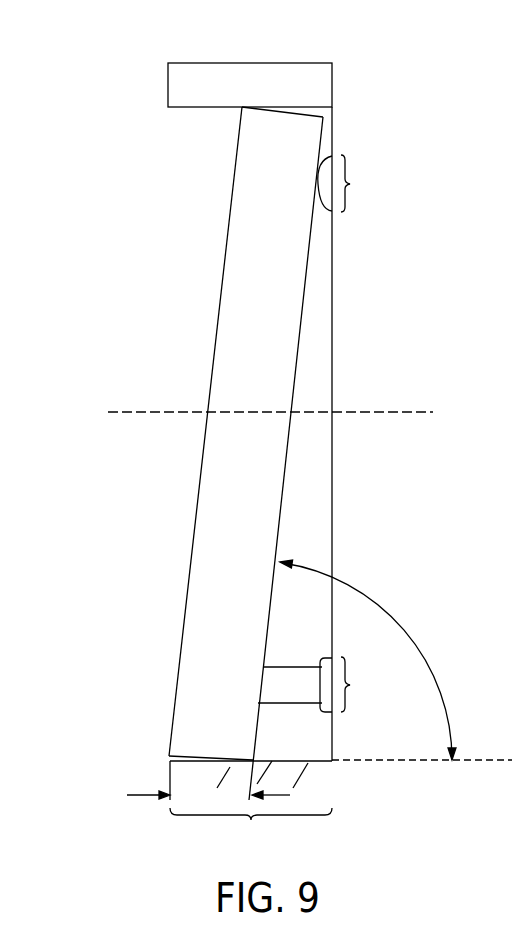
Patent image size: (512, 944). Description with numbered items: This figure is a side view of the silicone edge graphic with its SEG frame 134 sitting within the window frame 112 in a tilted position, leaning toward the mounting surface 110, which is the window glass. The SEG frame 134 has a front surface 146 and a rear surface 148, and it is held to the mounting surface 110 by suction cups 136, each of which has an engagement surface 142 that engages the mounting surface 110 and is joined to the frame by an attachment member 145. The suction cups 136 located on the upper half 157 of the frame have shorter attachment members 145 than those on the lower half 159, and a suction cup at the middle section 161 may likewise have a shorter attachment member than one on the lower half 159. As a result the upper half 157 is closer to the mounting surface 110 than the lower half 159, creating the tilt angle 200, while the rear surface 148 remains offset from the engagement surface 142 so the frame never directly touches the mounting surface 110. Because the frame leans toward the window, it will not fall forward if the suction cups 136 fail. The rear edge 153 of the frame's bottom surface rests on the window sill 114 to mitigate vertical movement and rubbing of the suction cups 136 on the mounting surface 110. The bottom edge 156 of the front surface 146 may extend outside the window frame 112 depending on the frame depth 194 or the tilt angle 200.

The window frame 112 is at (212, 82).
The mounting surface 110 is at (332, 383).
The SEG frame 134 is at (216, 479).
The front surface 146 is at (206, 434).
The rear surface 148 is at (289, 440).
The suction cup 136 is at (331, 152).
The engagement surface 142 is at (364, 433).
The attachment member 145 is at (315, 200).
The upper half 157 is at (77, 206).
The lower half 159 is at (77, 490).
The middle section 161 is at (150, 410).
The tilt angle 200 is at (403, 630).
The rear edge 153 is at (253, 759).
The bottom edge 156 is at (172, 752).
The window sill 114 is at (251, 810).
The frame depth 194 is at (132, 797).